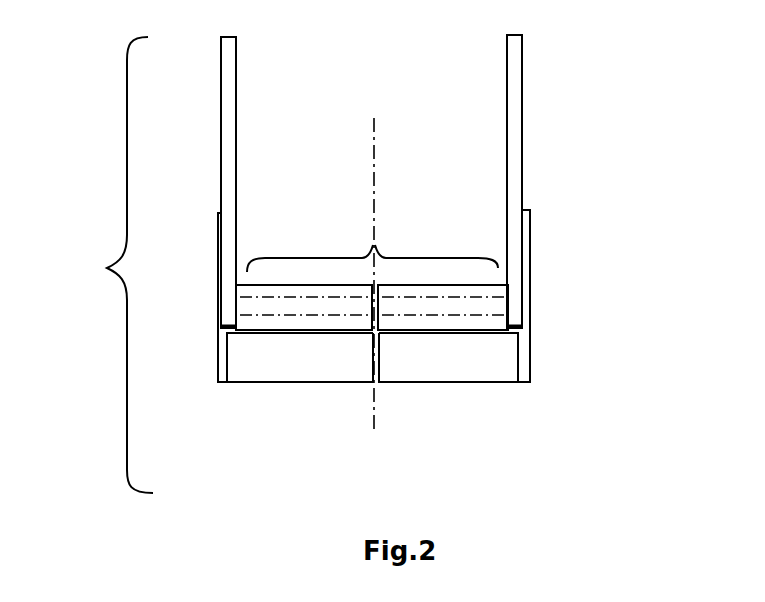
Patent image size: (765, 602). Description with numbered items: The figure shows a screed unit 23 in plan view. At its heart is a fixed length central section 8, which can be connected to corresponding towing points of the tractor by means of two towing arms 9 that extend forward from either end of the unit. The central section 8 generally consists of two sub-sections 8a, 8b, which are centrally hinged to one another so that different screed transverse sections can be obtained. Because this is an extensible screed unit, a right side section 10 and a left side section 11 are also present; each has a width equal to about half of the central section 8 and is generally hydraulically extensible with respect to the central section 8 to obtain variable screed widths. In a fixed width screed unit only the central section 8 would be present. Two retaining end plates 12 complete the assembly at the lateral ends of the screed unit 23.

The towing arm 9 is at (221, 97).
The retaining end plate 12 is at (218, 260).
The central section 8 is at (383, 243).
The sub-section 8a is at (345, 293).
The sub-section 8b is at (418, 293).
The left side section 11 is at (262, 365).
The right side section 10 is at (475, 363).
The screed unit 23 is at (103, 265).